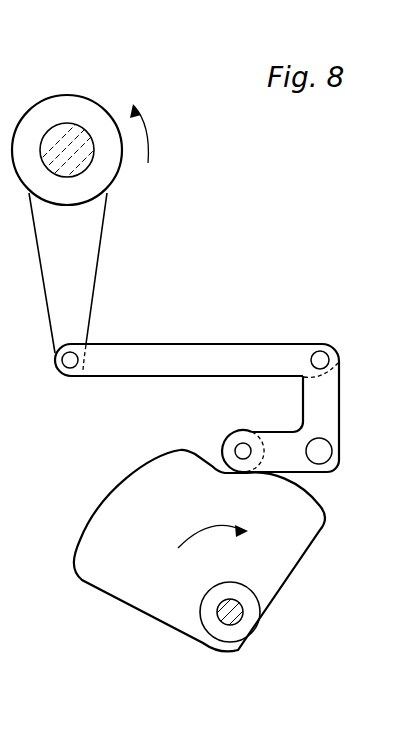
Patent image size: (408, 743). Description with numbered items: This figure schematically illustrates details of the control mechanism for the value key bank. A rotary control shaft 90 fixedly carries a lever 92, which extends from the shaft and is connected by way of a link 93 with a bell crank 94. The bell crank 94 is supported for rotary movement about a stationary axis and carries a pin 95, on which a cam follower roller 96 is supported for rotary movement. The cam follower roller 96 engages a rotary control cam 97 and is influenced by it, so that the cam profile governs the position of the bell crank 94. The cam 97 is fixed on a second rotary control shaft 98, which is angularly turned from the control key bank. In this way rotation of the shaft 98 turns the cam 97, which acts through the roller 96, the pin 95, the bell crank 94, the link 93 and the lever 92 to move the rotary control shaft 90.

The rotary control shaft 90 is at (68, 127).
The lever 92 is at (87, 240).
The link 93 is at (203, 348).
The bell crank 94 is at (327, 408).
The pin 95 is at (244, 443).
The cam follower roller 96 is at (223, 443).
The rotary control cam 97 is at (297, 548).
The rotary control shaft 98 is at (222, 622).